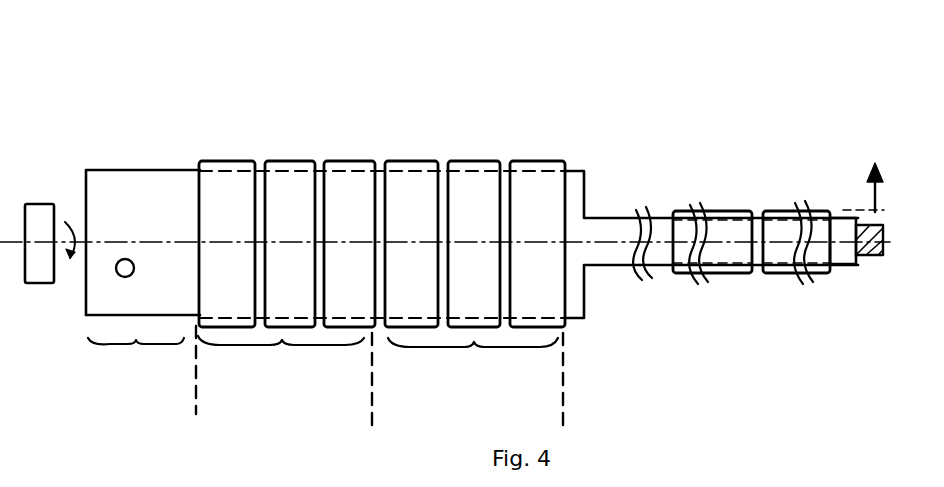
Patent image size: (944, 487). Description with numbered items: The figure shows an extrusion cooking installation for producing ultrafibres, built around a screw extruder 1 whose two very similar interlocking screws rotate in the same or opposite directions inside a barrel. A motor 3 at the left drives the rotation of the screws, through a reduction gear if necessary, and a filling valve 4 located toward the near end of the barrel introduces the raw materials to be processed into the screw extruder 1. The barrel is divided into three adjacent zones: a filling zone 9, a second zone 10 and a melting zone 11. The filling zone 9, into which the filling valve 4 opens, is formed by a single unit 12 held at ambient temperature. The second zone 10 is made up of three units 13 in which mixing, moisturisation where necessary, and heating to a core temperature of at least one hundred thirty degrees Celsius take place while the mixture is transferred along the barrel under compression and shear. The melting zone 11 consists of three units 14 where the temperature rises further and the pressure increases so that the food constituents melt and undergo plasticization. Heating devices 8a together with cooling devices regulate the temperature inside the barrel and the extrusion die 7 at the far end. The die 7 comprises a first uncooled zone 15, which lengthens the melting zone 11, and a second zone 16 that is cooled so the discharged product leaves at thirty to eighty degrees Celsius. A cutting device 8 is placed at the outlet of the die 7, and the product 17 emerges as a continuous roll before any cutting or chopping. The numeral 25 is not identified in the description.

The screw extruder 1 is at (732, 130).
The motor 3 is at (38, 218).
The filling valve 4 is at (117, 276).
The extrusion die 7 is at (653, 228).
The cutting device 8 is at (868, 175).
The heating device 8a is at (368, 154).
The filling zone 9 is at (142, 370).
The second zone 10 is at (285, 383).
The melting zone 11 is at (475, 383).
The unit 12 is at (177, 185).
The units 13 is at (287, 244).
The units 14 is at (475, 244).
The first uncooled zone 15 is at (618, 243).
The second cooled zone 16 is at (730, 210).
The product 17 is at (885, 282).
The housing wall 25 is at (98, 193).